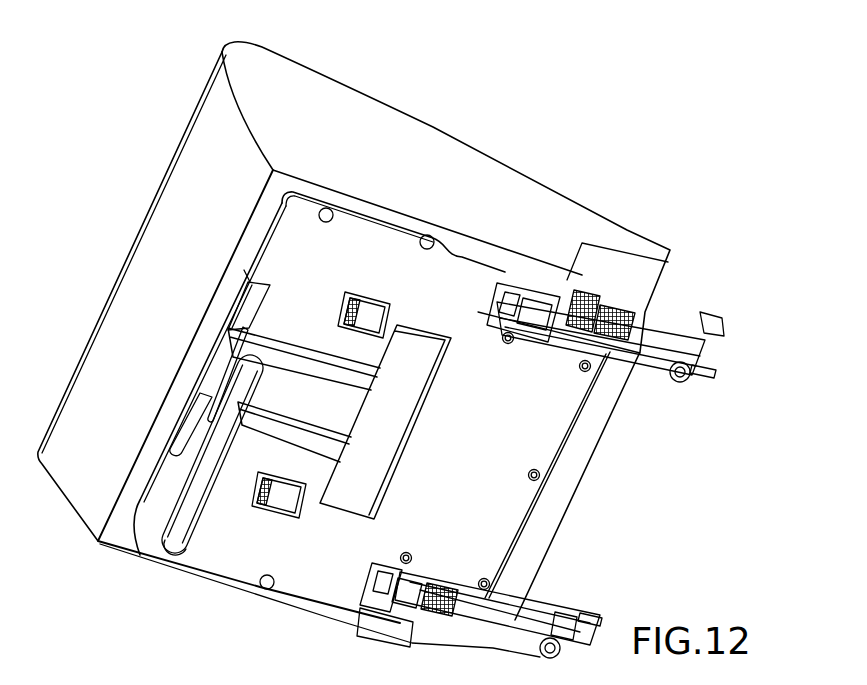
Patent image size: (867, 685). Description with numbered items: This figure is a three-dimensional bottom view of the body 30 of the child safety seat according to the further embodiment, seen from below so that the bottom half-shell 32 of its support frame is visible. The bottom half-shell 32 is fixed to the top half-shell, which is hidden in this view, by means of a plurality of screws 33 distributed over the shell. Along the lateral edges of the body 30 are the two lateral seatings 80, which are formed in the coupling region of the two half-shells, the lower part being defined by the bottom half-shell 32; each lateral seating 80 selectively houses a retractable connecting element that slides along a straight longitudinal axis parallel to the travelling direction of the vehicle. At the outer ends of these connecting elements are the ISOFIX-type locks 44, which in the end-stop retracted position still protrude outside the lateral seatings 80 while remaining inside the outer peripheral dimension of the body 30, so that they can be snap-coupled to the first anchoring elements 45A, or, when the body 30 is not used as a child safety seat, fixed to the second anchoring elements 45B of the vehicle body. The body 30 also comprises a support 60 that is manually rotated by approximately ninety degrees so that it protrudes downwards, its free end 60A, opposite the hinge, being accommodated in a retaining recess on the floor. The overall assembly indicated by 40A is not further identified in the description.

The body 30 is at (466, 133).
The bottom half-shell 32 is at (544, 432).
The screws 33 is at (511, 290).
The locks 44 is at (670, 331).
The first anchoring elements 45A is at (712, 314).
The second anchoring elements 45B is at (687, 589).
The support 60 is at (200, 432).
The free end 60A is at (162, 525).
The lateral seating 80 is at (557, 290).
The mounting assembly 40A is at (285, 0).